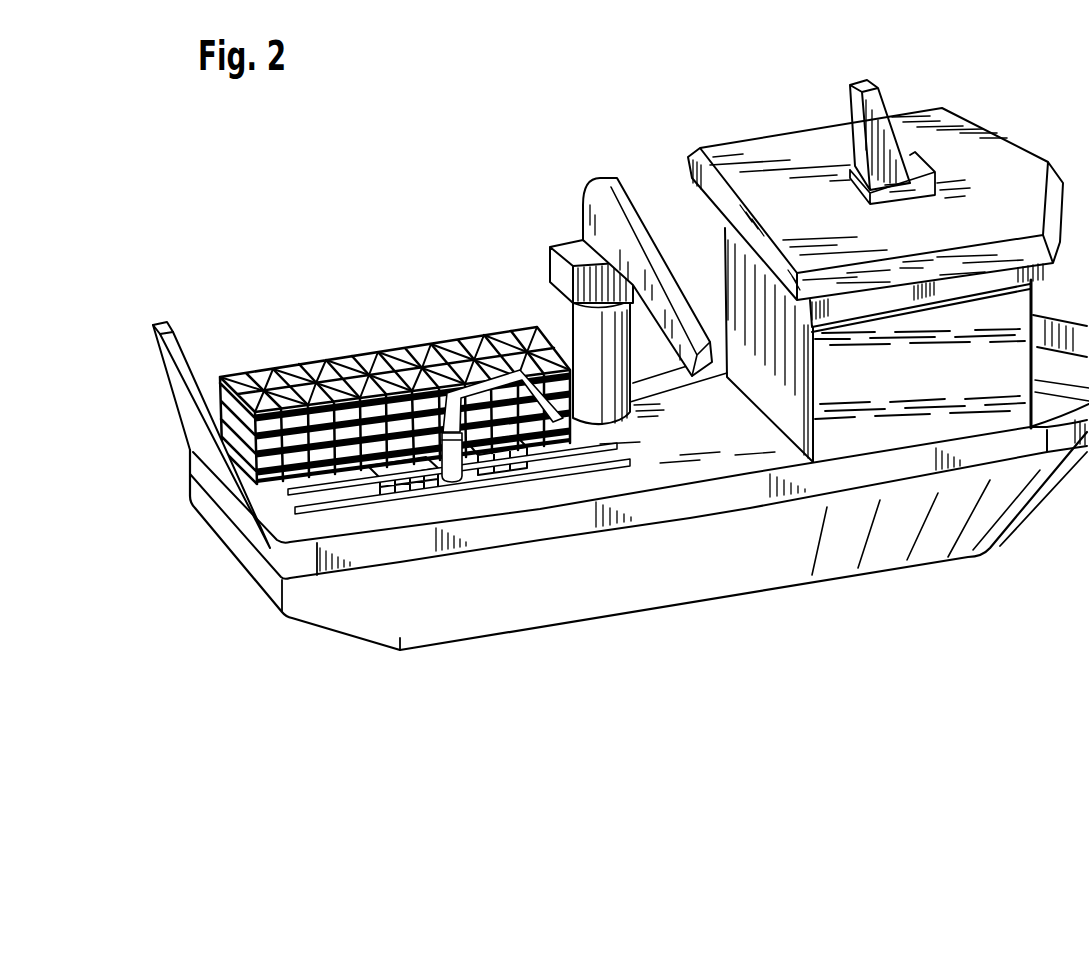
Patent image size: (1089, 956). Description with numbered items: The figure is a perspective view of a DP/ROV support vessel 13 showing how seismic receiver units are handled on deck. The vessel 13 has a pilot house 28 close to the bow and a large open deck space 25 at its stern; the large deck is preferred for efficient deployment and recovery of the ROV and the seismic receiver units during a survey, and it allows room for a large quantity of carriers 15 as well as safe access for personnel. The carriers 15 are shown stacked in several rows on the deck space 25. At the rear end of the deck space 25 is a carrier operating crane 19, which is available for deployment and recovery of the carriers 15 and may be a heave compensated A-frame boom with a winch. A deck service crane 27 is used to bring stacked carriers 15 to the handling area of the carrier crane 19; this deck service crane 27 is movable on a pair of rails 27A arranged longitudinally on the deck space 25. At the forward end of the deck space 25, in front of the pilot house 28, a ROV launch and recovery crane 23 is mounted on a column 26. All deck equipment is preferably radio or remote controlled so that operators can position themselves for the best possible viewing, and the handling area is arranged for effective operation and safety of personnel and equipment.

The DP/ROV vessel 13 is at (795, 635).
The carriers 15 is at (306, 340).
The carrier operating crane 19 is at (183, 337).
The ROV launch and recovery crane 23 is at (556, 191).
The deck space 25 is at (648, 472).
The column 26 is at (583, 318).
The deck service crane 27 is at (463, 476).
The rails 27A is at (636, 445).
The pilot house 28 is at (1017, 162).